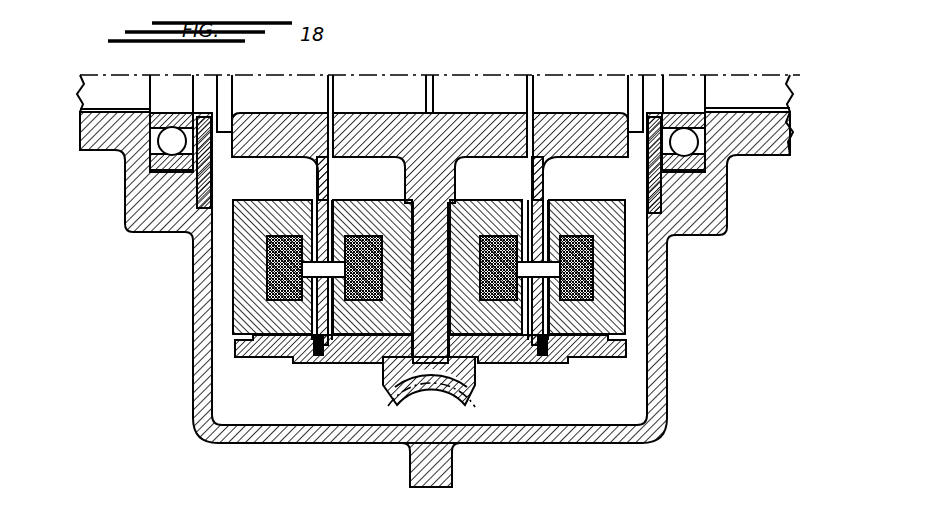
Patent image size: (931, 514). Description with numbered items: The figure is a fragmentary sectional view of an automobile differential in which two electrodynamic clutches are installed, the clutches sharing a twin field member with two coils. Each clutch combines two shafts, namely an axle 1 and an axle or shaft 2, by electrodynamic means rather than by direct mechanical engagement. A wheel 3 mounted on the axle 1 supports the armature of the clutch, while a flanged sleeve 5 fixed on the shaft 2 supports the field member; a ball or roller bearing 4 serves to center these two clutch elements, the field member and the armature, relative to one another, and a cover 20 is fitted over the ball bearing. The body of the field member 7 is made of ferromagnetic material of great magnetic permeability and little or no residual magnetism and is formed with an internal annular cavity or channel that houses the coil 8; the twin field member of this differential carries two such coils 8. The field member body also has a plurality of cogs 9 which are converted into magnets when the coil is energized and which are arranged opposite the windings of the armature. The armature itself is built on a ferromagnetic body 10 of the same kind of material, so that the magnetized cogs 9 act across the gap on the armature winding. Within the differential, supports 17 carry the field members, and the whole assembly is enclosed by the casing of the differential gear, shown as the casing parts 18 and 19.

The axle 1 is at (308, 86).
The axle or shaft 2 is at (390, 120).
The wheel 3 is at (400, 395).
The ball or roller bearing 4 is at (170, 141).
The flanged sleeve 5 is at (262, 118).
The field member body 7 is at (237, 242).
The coil 8 is at (268, 268).
The cogs 9 is at (313, 308).
The armature body 10 is at (318, 355).
The supports of the field members 17 is at (258, 348).
The casing of the differential gear 18 is at (255, 430).
The casing of the differential gear 19 is at (573, 437).
The cover of the ball bearing 20 is at (192, 196).